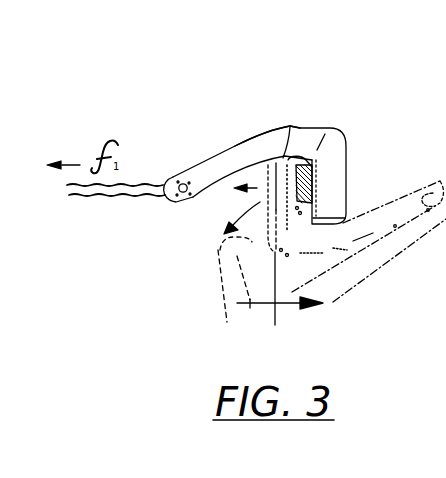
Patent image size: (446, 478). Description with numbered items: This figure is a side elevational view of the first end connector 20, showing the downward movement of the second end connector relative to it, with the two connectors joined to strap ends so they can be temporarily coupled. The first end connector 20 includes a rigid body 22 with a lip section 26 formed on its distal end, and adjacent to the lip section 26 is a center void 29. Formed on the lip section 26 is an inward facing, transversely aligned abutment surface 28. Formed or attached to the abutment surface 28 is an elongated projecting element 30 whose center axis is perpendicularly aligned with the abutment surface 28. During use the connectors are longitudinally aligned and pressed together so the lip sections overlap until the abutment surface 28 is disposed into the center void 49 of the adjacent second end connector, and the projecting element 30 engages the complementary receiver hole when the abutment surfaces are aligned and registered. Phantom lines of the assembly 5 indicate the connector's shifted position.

The track 5 is at (332, 193).
The first end connector 20 is at (214, 137).
The rigid body 22 is at (331, 119).
The lip section 26 is at (333, 188).
The abutment surface 28 is at (289, 126).
The center void 29 is at (270, 166).
The elongated projecting element 30 is at (318, 187).
The center void 49 is at (312, 210).